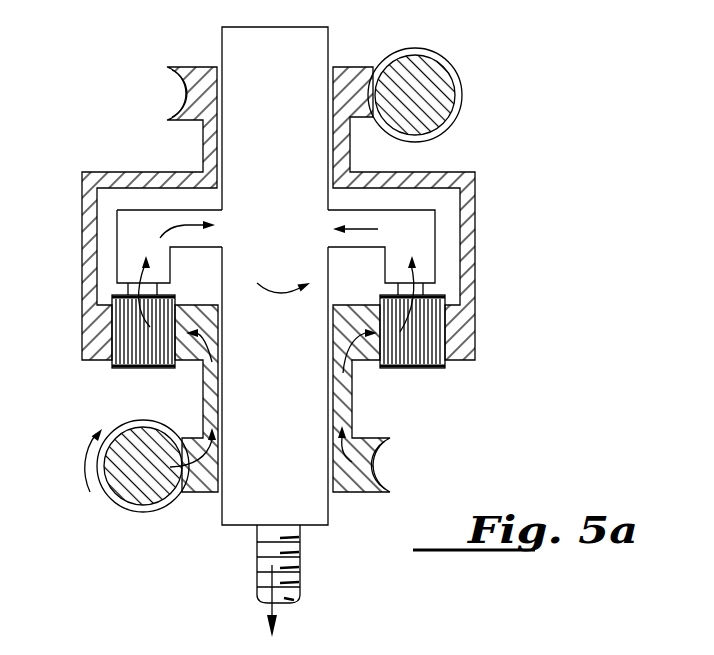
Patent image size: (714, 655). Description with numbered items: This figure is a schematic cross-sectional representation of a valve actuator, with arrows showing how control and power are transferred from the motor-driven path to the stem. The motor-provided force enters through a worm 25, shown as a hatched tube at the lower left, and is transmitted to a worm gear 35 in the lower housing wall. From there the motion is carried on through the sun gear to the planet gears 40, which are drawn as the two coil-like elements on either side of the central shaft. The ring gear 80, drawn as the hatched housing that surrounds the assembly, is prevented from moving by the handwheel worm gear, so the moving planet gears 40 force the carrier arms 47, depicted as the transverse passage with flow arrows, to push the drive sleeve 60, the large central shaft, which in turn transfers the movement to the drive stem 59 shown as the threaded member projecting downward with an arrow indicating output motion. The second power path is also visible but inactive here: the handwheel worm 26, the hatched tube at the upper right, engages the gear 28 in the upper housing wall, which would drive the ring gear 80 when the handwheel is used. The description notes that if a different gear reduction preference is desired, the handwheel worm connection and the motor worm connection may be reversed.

The worm 25 is at (130, 480).
The worm 26 is at (430, 95).
The gear 28 is at (349, 85).
The worm gear 35 is at (203, 490).
The planet gears 40 is at (120, 367).
The carrier arms 47 is at (167, 220).
The stem 59 is at (295, 565).
The drive sleeve 60 is at (295, 390).
The ring gear 80 is at (158, 182).